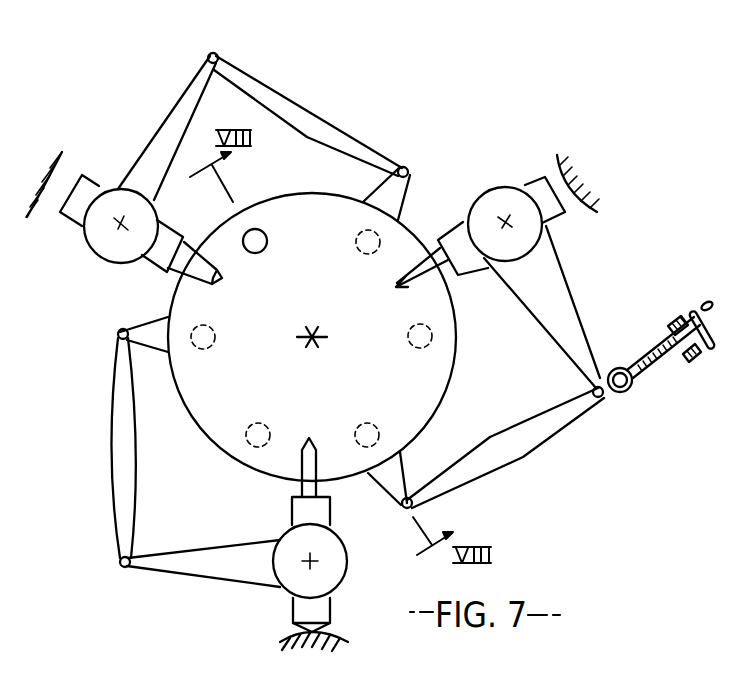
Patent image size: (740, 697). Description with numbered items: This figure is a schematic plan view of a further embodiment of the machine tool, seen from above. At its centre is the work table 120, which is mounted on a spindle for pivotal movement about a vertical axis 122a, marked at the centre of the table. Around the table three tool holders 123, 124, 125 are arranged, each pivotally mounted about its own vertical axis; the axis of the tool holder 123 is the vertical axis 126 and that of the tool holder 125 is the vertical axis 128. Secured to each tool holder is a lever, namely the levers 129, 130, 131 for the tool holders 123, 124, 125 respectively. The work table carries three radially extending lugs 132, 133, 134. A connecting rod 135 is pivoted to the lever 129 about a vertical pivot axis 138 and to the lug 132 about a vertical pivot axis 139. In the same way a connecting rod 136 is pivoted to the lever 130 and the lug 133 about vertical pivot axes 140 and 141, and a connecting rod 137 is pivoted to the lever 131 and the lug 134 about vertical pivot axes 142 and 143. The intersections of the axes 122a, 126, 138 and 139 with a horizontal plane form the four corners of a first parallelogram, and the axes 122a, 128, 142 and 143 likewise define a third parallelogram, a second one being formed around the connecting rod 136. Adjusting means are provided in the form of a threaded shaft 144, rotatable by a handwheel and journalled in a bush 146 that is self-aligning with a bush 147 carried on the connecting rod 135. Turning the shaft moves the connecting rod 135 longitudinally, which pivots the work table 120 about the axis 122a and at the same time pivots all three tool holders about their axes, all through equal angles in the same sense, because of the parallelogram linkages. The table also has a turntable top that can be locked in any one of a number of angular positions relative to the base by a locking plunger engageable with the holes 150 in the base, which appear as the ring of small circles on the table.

The work table 120 is at (457, 333).
The vertical axis 122a is at (316, 334).
The tool holder 123 is at (451, 238).
The tool holder 124 is at (307, 512).
The tool holder 125 is at (142, 268).
The vertical axis 126 is at (502, 222).
The vertical axis 128 is at (120, 228).
The lever 129 is at (545, 283).
The lever 130 is at (213, 567).
The lever 131 is at (173, 135).
The lug 132 is at (396, 472).
The lug 133 is at (150, 340).
The lug 134 is at (408, 192).
The connecting rod 135 is at (520, 432).
The connecting rod 136 is at (133, 474).
The connecting rod 137 is at (326, 107).
The vertical pivot axis 138 is at (610, 396).
The vertical pivot axis 139 is at (403, 508).
The vertical pivot axis 140 is at (124, 569).
The vertical pivot axis 141 is at (118, 333).
The vertical pivot axis 142 is at (216, 53).
The vertical pivot axis 143 is at (407, 167).
The threaded shaft 144 is at (686, 366).
The bush 146 is at (675, 314).
The bush 147 is at (615, 365).
The holes 150 is at (356, 243).